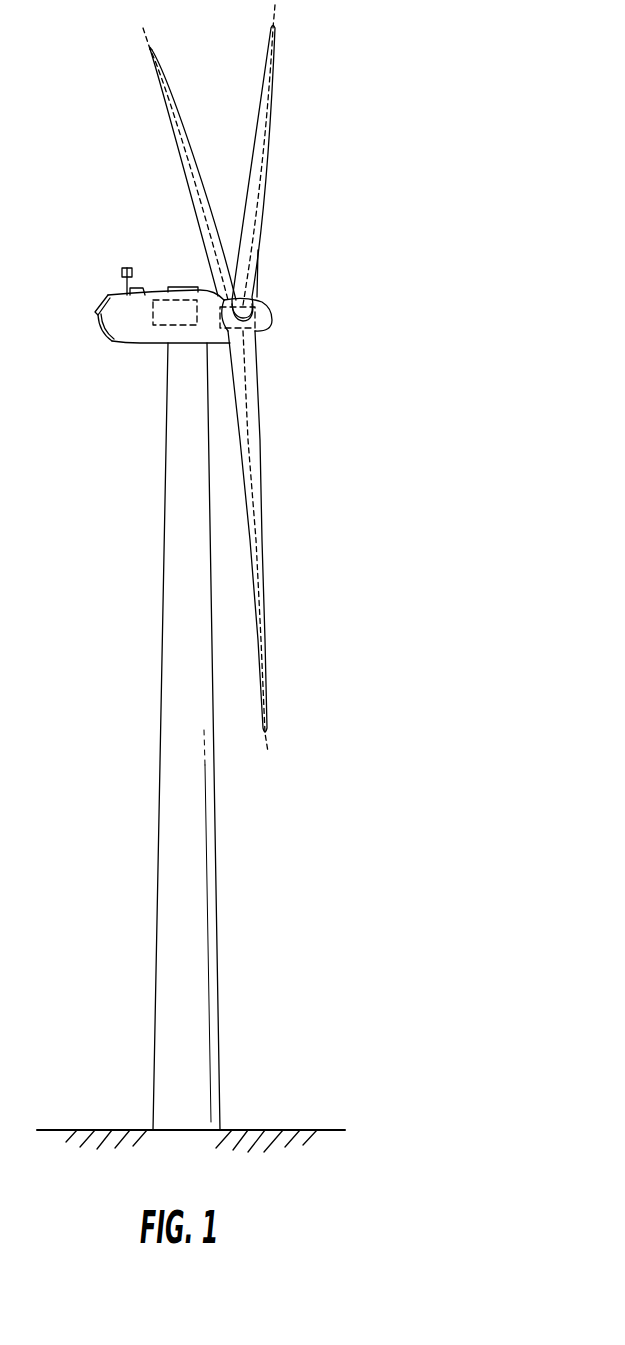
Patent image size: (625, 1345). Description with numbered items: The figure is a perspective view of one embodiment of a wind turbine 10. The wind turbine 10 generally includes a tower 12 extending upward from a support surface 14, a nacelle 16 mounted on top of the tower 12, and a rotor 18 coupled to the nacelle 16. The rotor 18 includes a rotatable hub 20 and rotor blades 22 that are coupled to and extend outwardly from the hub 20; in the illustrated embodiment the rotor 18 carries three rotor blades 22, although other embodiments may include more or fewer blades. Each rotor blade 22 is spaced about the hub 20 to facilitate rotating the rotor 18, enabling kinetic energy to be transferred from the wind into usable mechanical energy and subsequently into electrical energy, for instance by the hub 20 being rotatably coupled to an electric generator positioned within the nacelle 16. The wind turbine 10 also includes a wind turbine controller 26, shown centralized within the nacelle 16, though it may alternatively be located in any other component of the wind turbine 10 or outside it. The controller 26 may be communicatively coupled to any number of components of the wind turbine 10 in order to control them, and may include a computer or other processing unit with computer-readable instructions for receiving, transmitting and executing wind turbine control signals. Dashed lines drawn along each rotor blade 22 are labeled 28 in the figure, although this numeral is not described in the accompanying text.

The wind turbine 10 is at (396, 98).
The tower 12 is at (172, 800).
The support surface 14 is at (112, 1130).
The nacelle 16 is at (133, 343).
The rotor 18 is at (280, 290).
The rotatable hub 20 is at (270, 322).
The rotor blade 22 is at (250, 182).
The wind turbine controller 26 is at (168, 292).
The pitch axis 28 is at (172, 116).